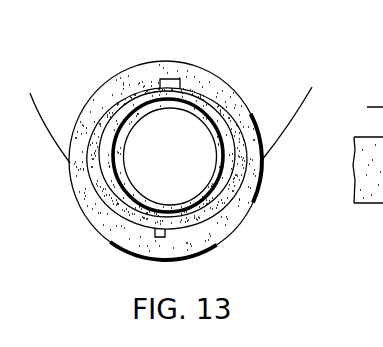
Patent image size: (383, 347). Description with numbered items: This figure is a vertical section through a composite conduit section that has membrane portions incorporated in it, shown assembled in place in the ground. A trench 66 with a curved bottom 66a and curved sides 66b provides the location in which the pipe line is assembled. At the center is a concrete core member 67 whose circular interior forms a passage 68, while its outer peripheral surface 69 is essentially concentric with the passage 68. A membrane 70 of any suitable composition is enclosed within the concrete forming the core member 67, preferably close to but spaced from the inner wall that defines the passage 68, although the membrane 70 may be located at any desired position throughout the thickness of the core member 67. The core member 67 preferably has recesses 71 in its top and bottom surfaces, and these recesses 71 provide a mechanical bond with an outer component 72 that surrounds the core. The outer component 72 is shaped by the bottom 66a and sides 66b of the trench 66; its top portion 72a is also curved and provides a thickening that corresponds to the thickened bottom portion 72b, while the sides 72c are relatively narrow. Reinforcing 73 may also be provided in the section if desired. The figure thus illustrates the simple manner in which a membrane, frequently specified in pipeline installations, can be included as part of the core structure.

The trench 66 is at (55, 140).
The curved bottom 66a is at (202, 253).
The curved sides 66b is at (262, 200).
The core member 67 is at (253, 105).
The passage 68 is at (181, 149).
The outer peripheral surface 69 is at (167, 146).
The membrane 70 is at (213, 101).
The recesses 71 is at (182, 85).
The outer component 72 is at (157, 58).
The top portion 72a is at (206, 80).
The bottom portion 72b is at (127, 252).
The sides 72c is at (265, 166).
The reinforcing 73 is at (85, 207).